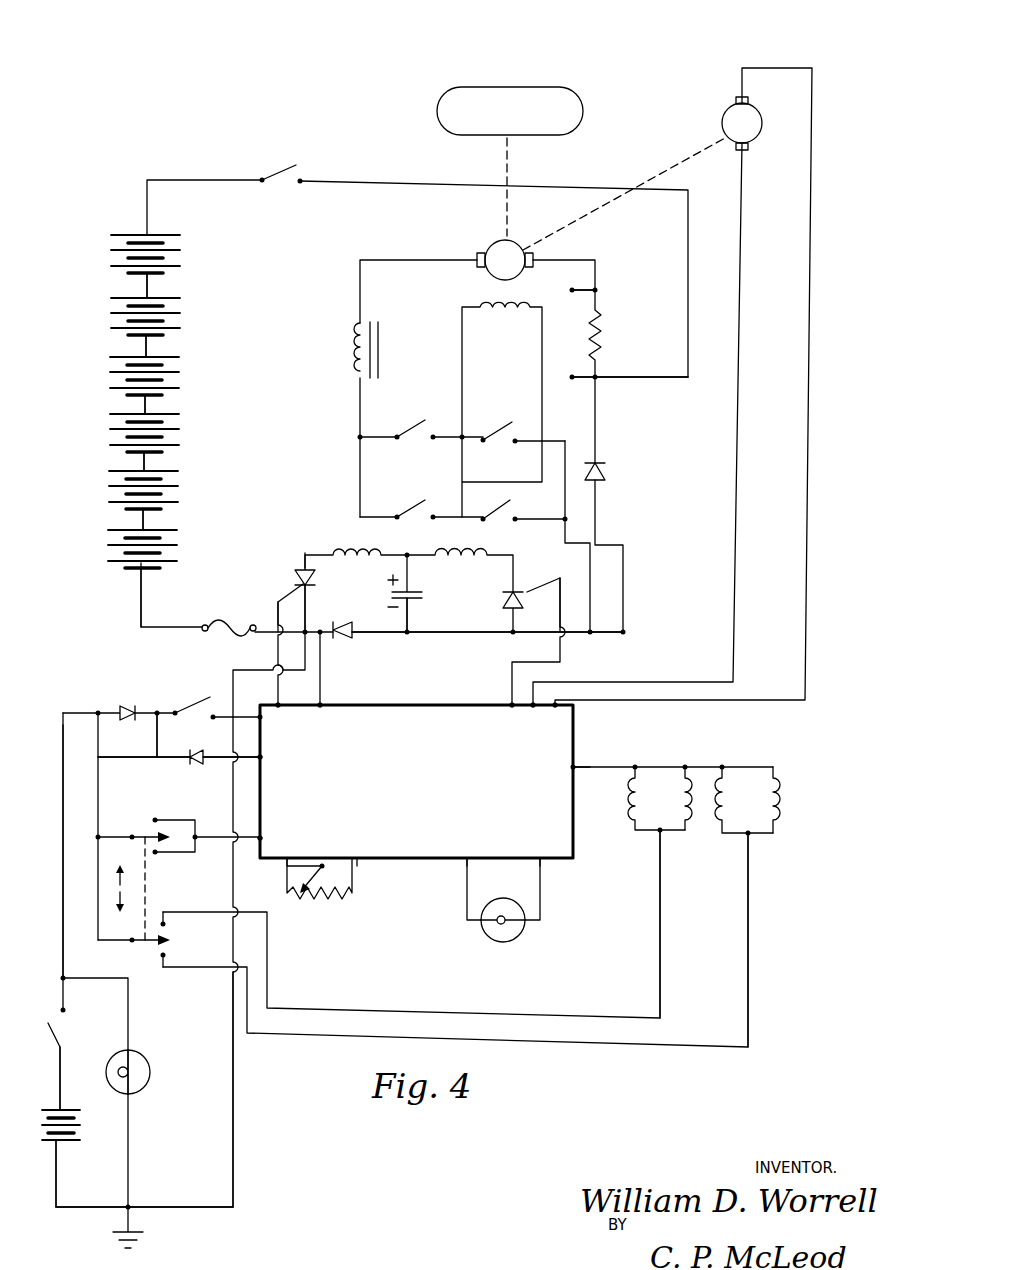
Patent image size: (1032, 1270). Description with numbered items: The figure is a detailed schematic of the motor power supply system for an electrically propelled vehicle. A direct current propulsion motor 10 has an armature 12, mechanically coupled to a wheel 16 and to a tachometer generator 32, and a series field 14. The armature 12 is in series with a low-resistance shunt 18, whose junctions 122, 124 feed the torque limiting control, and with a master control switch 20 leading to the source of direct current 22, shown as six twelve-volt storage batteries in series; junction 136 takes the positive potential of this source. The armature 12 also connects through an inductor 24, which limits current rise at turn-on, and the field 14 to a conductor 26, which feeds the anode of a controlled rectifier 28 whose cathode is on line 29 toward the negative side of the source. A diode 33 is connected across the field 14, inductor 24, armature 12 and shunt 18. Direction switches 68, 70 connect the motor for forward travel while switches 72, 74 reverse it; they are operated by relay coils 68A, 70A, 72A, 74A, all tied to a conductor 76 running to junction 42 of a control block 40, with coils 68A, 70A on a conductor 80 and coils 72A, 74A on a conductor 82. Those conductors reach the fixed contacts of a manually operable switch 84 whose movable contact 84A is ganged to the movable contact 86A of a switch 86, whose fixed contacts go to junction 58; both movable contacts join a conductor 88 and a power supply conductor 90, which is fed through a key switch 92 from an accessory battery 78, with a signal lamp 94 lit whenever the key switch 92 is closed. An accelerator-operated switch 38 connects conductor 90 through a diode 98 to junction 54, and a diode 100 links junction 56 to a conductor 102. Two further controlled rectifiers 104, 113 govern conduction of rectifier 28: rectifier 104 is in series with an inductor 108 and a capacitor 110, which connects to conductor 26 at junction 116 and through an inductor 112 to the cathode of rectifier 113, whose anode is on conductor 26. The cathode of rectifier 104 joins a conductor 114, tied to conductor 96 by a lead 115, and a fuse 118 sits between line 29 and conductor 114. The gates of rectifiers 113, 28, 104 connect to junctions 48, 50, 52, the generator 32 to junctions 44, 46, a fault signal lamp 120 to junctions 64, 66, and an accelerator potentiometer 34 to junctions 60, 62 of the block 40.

The electric propulsion motor 10 is at (478, 240).
The armature 12 is at (513, 246).
The series field 14 is at (498, 312).
The wheel 16 is at (530, 87).
The motor shunt 18 is at (603, 333).
The master control switch 20 is at (272, 165).
The source of direct current 22 is at (200, 362).
The inductor 24 is at (352, 368).
The conductor 26 is at (500, 636).
The controlled rectifier 28 is at (342, 640).
The line 29 is at (141, 592).
The tachometer generator 32 is at (722, 115).
The diode 33 is at (605, 470).
The potentiometer 34 is at (328, 905).
The switch 38 is at (192, 700).
The control block 40 is at (588, 714).
The junction 42 is at (573, 767).
The junction 44 is at (555, 708).
The junction 46 is at (533, 708).
The junction 48 is at (512, 708).
The junction 50 is at (322, 708).
The junction 52 is at (280, 708).
The junction 54 is at (262, 712).
The junction 56 is at (262, 757).
The junction 58 is at (262, 838).
The junction 60 is at (288, 858).
The junction 62 is at (358, 858).
The junction 64 is at (467, 858).
The junction 66 is at (540, 858).
The direction switch 68 is at (410, 425).
The direction switch 70 is at (500, 510).
The direction switch 72 is at (500, 446).
The direction switch 74 is at (407, 508).
The conductor 76 is at (603, 768).
The accessory battery 78 is at (82, 1125).
The conductor 80 is at (662, 976).
The conductor 82 is at (750, 942).
The manually operable switch 84 is at (166, 918).
The movable contact 84A is at (166, 958).
The switch 86 is at (158, 818).
The movable contact 86A is at (150, 837).
The conductor 88 is at (108, 757).
The power supply conductor 90 is at (62, 725).
The key switch 92 is at (65, 1030).
The signal lamp 94 is at (152, 1072).
The conductor 96 is at (185, 1208).
The diode 98 is at (128, 700).
The diode 100 is at (196, 765).
The conductor 102 is at (162, 735).
The controlled rectifier 104 is at (305, 566).
The inductor 108 is at (325, 553).
The capacitor 110 is at (395, 592).
The inductor 112 is at (472, 562).
The controlled rectifier 113 is at (512, 600).
The conductor 114 is at (286, 598).
The lead 115 is at (235, 1135).
The junction 116 is at (407, 638).
The fuse 118 is at (208, 624).
The signal lamp 120 is at (518, 936).
The junction 122 is at (572, 292).
The junction 124 is at (572, 378).
The junction 136 is at (597, 378).
The relay coil 68A is at (637, 828).
The relay coil 70A is at (685, 768).
The relay coil 72A is at (724, 828).
The relay coil 74A is at (776, 800).